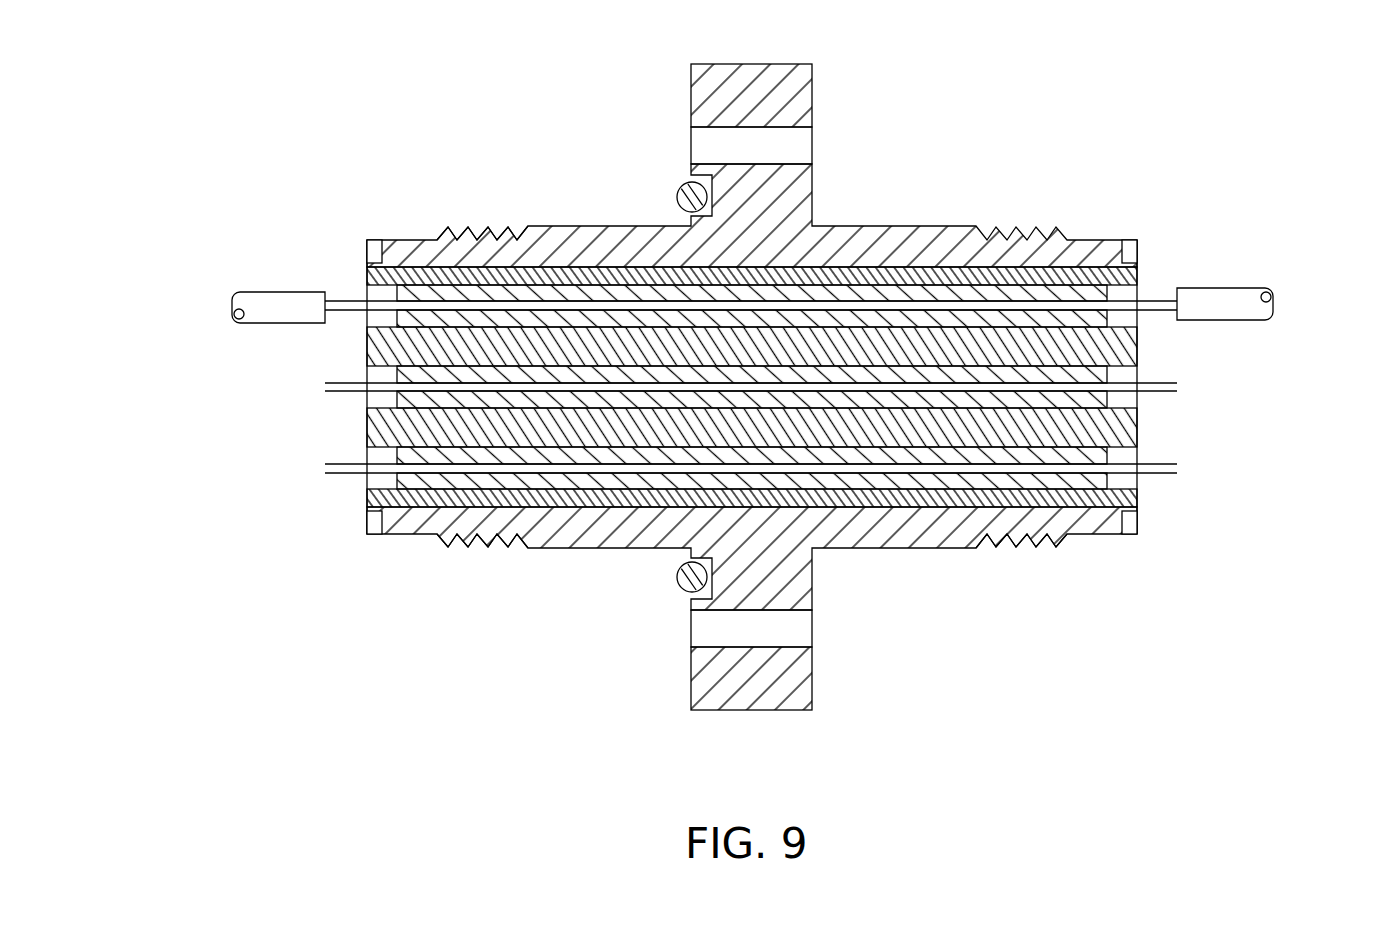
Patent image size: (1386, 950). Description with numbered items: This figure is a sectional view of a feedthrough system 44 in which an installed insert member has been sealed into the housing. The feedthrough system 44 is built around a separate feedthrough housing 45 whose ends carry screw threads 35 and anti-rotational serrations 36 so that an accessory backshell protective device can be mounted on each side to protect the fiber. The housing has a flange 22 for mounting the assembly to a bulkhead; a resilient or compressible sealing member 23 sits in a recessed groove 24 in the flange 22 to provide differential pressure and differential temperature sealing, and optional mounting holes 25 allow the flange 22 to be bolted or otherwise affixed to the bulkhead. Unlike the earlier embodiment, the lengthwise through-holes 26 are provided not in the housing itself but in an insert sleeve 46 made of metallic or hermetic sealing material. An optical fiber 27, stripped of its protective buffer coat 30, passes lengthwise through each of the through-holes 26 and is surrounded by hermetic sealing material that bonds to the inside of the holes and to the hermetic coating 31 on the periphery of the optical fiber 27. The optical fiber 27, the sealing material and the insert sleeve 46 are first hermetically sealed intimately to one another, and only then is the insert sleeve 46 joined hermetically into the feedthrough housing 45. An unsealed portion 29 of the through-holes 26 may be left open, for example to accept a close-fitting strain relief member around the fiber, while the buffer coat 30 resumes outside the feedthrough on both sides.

The flange 22 is at (842, 667).
The sealing member 23 is at (597, 622).
The recessed groove 24 is at (605, 146).
The mounting holes 25 is at (831, 94).
The lengthwise through-holes 26 is at (819, 193).
The optical fiber 27 is at (1020, 237).
The unsealed portion 29 is at (474, 248).
The buffer coat 30 is at (1270, 362).
The hermetic coating 31 is at (248, 381).
The screw threads 35 is at (748, 601).
The anti-rotational serrations 36 is at (747, 427).
The feedthrough system 44 is at (752, 353).
The feedthrough housing 45 is at (487, 194).
The insert sleeve 46 is at (860, 494).